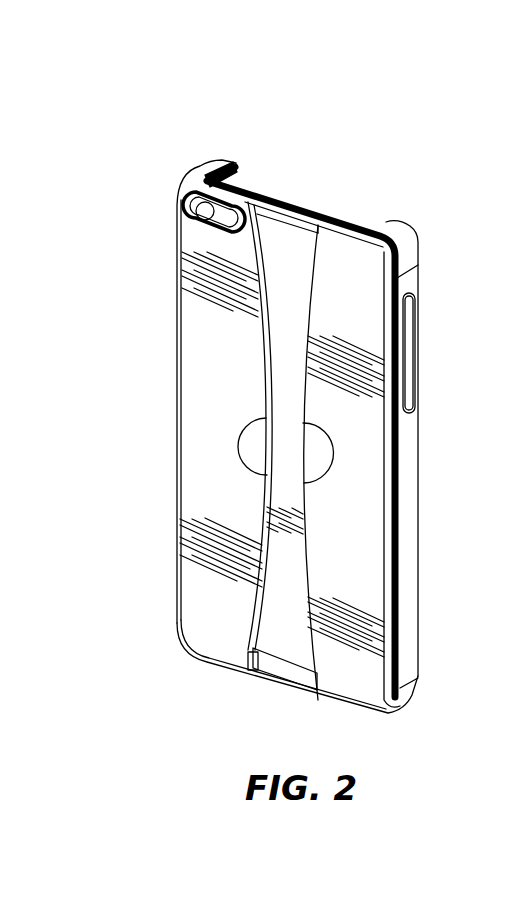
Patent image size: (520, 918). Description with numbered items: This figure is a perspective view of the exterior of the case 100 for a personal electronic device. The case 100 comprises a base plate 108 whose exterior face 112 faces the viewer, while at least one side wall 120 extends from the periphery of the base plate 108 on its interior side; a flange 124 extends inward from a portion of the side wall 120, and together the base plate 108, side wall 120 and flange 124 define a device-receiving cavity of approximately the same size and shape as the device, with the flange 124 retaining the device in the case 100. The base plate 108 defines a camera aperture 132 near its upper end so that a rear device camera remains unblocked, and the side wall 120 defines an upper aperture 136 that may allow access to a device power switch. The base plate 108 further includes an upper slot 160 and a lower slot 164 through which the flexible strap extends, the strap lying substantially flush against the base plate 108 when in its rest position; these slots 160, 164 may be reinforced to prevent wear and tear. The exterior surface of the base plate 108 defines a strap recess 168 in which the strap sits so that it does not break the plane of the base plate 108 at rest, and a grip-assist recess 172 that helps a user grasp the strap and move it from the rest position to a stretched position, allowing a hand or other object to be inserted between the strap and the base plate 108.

The case 100 is at (104, 129).
The base plate 108 is at (193, 352).
The exterior face 112 is at (241, 495).
The side wall 120 is at (196, 172).
The flange 124 is at (236, 165).
The camera aperture 132 is at (181, 228).
The upper aperture 136 is at (377, 219).
The upper slot 160 is at (291, 203).
The lower slot 164 is at (285, 668).
The strap recess 168 is at (298, 273).
The grip-assist recess 172 is at (324, 447).